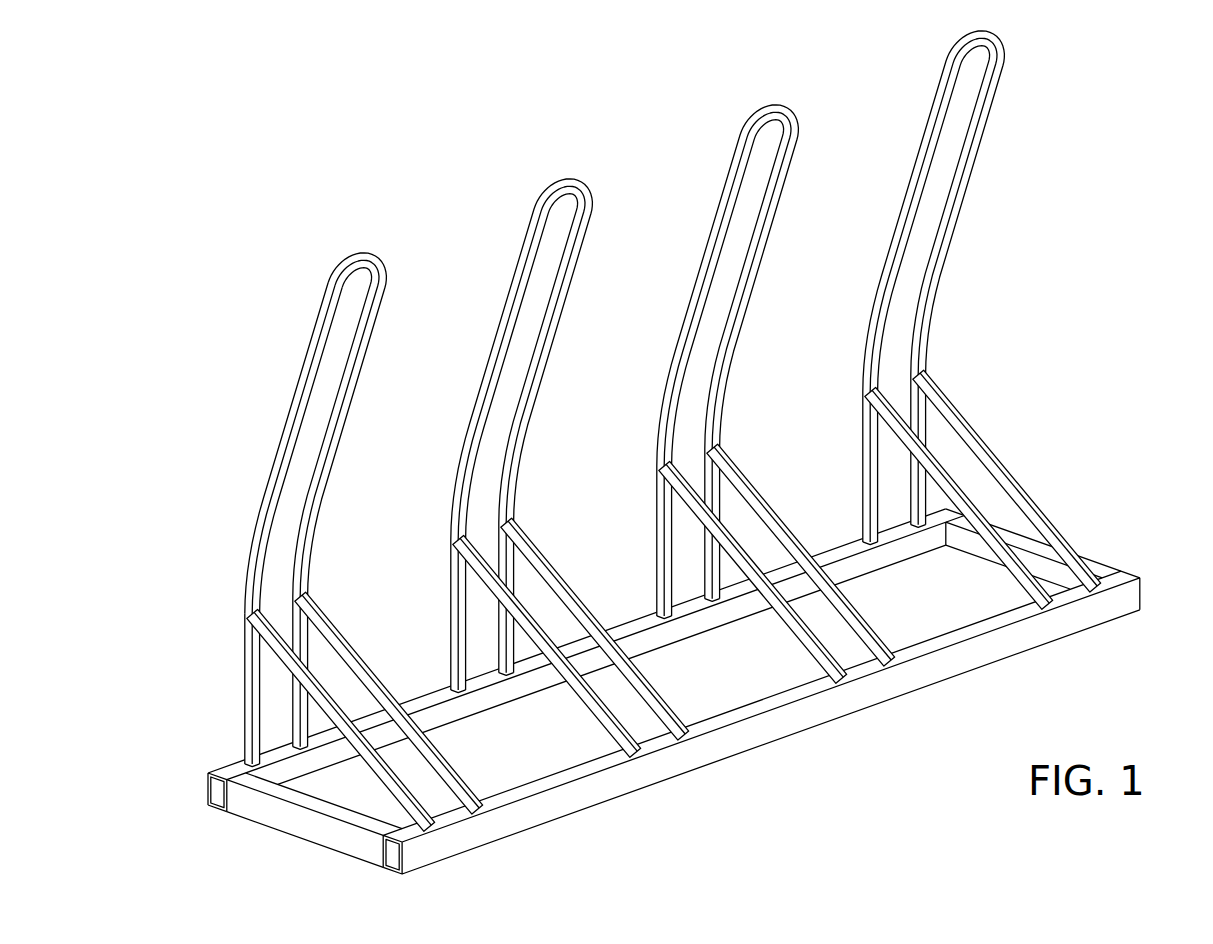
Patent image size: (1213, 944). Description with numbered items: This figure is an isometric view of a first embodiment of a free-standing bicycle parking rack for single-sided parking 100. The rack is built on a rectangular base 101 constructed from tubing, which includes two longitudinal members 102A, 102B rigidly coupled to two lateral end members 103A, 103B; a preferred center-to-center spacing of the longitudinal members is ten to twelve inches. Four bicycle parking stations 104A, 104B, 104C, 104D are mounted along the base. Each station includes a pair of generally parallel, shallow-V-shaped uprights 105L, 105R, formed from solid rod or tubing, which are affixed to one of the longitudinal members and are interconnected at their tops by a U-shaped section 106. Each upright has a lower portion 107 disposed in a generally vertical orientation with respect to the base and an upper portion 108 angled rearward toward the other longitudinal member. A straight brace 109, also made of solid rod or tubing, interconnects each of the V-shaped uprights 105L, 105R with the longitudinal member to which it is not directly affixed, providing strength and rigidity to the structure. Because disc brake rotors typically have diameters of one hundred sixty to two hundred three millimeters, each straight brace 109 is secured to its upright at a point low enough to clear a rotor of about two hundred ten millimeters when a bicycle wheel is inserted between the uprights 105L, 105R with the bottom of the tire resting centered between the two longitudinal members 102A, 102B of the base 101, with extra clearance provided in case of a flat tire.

The free-standing bicycle parking rack for single-sided parking 100 is at (666, 452).
The rectangular base 101 is at (666, 691).
The longitudinal member 102A is at (432, 702).
The longitudinal member 102B is at (582, 795).
The lateral end member 103A is at (272, 812).
The lateral end member 103B is at (1102, 570).
The bicycle parking station 104A is at (463, 826).
The bicycle parking station 104B is at (615, 659).
The bicycle parking station 104C is at (877, 680).
The bicycle parking station 104D is at (1085, 604).
The shallow-V-shaped upright 105L is at (249, 525).
The shallow-V-shaped upright 105R is at (335, 468).
The U-shaped section 106 is at (370, 256).
The lower portion of V-shaped upright 107 is at (247, 668).
The upper portion of V-shaped upright 108 is at (300, 385).
The straight brace 109 is at (596, 714).